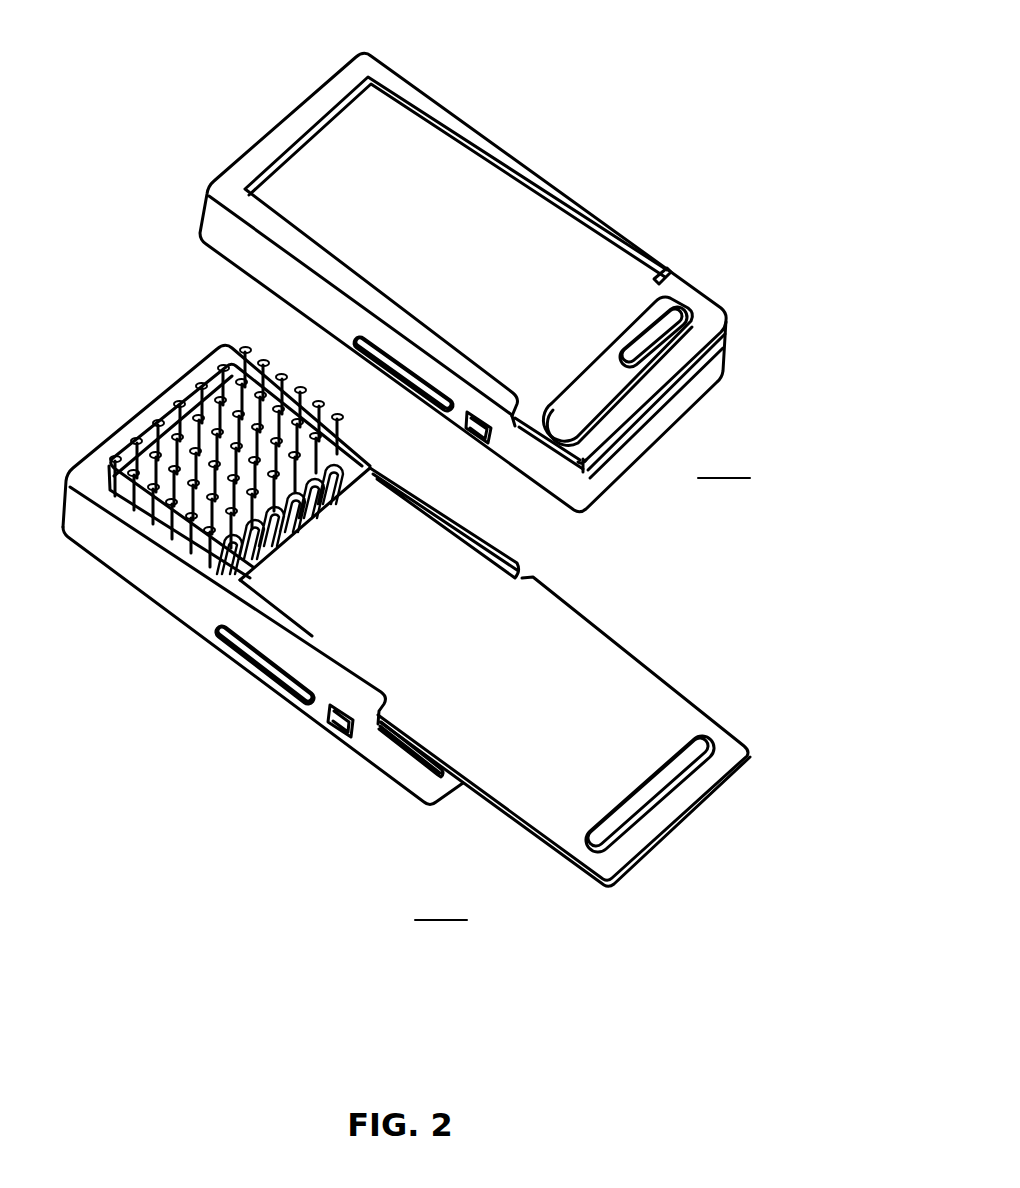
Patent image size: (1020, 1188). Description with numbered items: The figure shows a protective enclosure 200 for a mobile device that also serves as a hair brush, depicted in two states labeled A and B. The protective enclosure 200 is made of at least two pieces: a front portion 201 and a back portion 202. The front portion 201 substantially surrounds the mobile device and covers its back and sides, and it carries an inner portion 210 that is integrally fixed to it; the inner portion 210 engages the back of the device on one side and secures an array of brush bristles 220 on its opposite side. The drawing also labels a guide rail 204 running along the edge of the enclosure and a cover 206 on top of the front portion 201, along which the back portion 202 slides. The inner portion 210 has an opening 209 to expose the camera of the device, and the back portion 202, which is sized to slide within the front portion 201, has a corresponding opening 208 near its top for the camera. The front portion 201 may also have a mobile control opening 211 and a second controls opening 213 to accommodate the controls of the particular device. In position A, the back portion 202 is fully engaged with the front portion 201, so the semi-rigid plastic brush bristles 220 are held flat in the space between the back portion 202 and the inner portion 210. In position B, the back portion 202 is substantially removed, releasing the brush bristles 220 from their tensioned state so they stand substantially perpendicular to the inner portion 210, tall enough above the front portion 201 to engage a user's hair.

The protective enclosure 200 is at (634, 38).
The front portion 201 is at (232, 248).
The back portion 202 is at (703, 322).
The guide rail 204 is at (523, 173).
The cover 206 is at (272, 137).
The opening 208 is at (700, 750).
The opening 209 is at (660, 333).
The inner portion 210 is at (582, 416).
The mobile control opening 211 is at (278, 670).
The second controls opening 213 is at (323, 737).
The brush bristles 220 is at (178, 403).